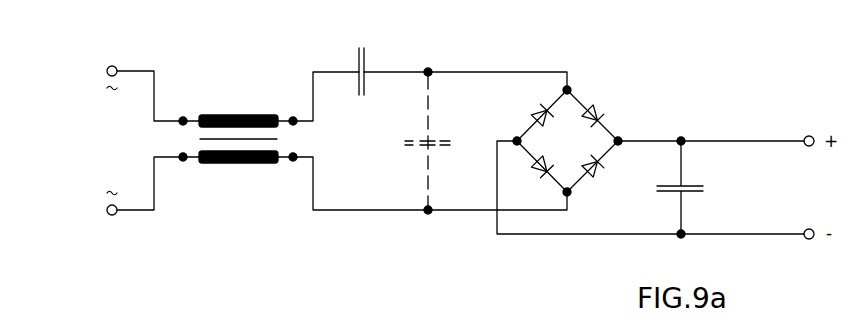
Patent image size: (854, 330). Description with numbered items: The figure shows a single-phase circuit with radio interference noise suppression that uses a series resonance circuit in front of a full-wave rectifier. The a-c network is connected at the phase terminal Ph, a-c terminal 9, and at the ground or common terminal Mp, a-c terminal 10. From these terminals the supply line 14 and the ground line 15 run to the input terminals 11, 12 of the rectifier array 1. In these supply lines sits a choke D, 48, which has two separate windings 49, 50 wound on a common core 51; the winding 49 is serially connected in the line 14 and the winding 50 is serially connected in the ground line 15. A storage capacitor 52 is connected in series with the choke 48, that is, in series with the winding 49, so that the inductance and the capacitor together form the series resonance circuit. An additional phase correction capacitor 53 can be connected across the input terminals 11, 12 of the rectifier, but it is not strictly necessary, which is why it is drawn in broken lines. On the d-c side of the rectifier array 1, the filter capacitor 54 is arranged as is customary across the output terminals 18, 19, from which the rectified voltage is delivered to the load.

The rectifier array 1 is at (577, 134).
The a-c terminal 9 is at (113, 65).
The a-c terminal 10 is at (117, 214).
The input terminal 11 is at (570, 88).
The input terminal 12 is at (570, 194).
The line 14 is at (154, 87).
The ground line 15 is at (154, 193).
The output terminal 18 is at (619, 138).
The output terminal 19 is at (516, 139).
The choke 48 is at (233, 131).
The winding 49 is at (215, 115).
The winding 50 is at (207, 163).
The common core 51 is at (200, 139).
The storage capacitor C1 52 is at (366, 55).
The phase correction capacitor C3 53 is at (432, 139).
The filter capacitor C2 54 is at (687, 184).